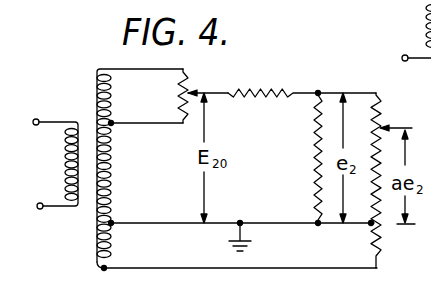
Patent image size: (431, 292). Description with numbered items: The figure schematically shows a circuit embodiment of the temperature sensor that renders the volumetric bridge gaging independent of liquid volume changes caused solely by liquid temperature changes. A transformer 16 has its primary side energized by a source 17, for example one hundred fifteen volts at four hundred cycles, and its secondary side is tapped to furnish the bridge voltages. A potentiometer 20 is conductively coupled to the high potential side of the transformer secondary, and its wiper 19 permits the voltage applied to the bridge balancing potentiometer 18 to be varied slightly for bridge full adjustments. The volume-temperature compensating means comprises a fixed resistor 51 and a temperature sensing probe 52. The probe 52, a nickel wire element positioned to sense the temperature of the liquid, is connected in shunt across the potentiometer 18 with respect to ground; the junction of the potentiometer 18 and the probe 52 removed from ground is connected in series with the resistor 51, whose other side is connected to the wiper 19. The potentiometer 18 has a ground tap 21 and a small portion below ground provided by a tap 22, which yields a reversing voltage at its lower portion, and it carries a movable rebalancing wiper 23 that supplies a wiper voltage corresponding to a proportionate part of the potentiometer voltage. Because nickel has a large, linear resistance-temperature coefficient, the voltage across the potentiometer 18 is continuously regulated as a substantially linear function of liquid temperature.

The transformer 16 is at (85, 207).
The source 17 is at (35, 168).
The bridge balancing potentiometer 18 is at (383, 110).
The wiper 19 is at (207, 91).
The potentiometer 20 is at (176, 93).
The ground tap 21 is at (243, 222).
The tap 22 is at (113, 266).
The rebalancing wiper 23 is at (396, 127).
The fixed resistor 51 is at (263, 91).
The temperature sensing probe 52 is at (312, 156).